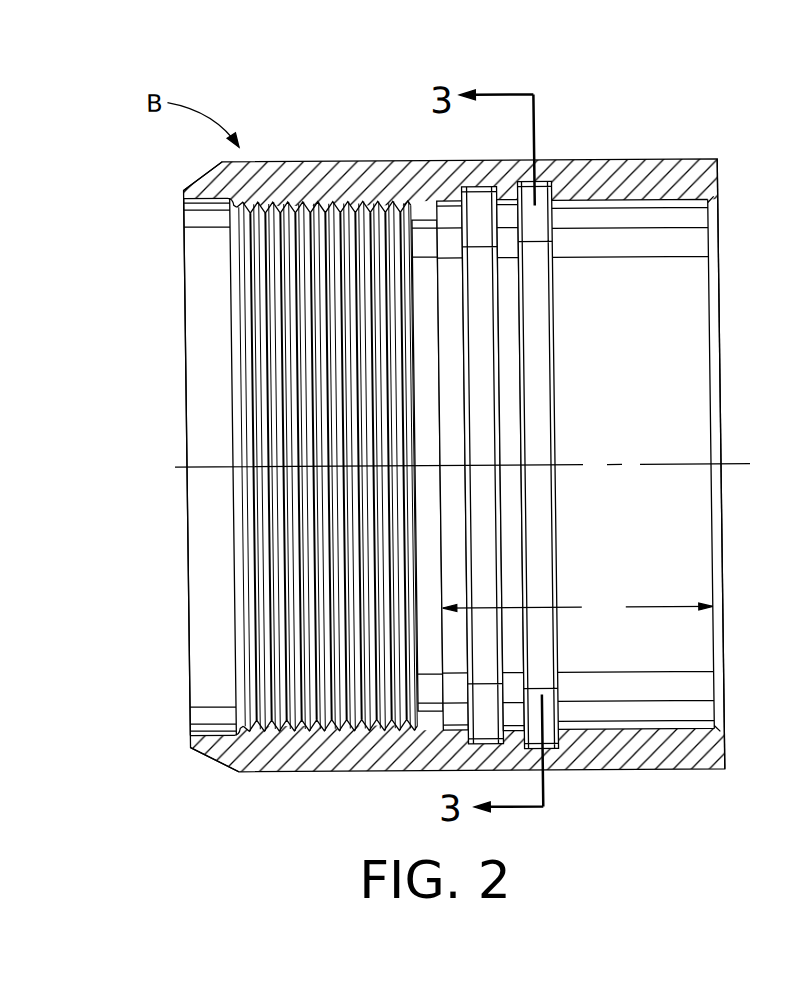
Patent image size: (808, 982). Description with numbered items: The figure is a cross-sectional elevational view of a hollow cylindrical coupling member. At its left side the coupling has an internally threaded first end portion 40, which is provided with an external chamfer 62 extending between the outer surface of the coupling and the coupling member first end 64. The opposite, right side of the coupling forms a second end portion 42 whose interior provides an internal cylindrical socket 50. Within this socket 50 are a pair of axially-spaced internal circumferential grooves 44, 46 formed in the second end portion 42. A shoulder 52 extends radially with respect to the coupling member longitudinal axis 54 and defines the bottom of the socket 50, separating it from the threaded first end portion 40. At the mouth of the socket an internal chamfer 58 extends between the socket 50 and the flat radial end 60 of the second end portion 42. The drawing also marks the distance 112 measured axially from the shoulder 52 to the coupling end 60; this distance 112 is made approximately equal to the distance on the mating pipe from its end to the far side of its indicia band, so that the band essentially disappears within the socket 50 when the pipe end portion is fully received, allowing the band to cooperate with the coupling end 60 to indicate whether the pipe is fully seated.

The first end portion 40 is at (233, 611).
The second end portion 42 is at (630, 161).
The internal circumferential groove 44 is at (482, 187).
The internal circumferential groove 46 is at (555, 182).
The internal cylindrical socket 50 is at (660, 202).
The shoulder 52 is at (451, 201).
The longitudinal axis 54 is at (734, 465).
The internal chamfer 58 is at (717, 200).
The flat radial end 60 is at (722, 172).
The external chamfer 62 is at (206, 176).
The first end 64 is at (187, 196).
The distance 112 is at (578, 607).